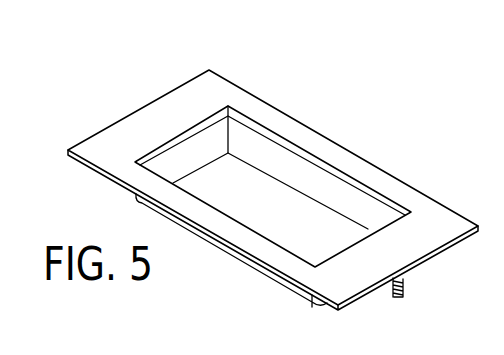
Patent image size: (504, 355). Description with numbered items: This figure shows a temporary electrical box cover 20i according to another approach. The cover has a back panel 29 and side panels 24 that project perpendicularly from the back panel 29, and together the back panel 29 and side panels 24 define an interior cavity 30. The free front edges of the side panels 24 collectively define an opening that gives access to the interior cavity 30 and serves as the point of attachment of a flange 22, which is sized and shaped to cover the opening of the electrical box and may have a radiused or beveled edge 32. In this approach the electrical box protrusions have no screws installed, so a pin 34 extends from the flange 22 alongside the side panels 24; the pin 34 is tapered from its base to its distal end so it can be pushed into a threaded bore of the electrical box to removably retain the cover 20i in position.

The electrical box cover 20i is at (390, 124).
The flange 22 is at (137, 128).
The side walls/panels 24 is at (205, 146).
The back panel/base 29 is at (317, 238).
The interior cavity 30 is at (268, 207).
The radiused or beveled edge 32 is at (385, 197).
The pins/protrusions 34 is at (403, 294).